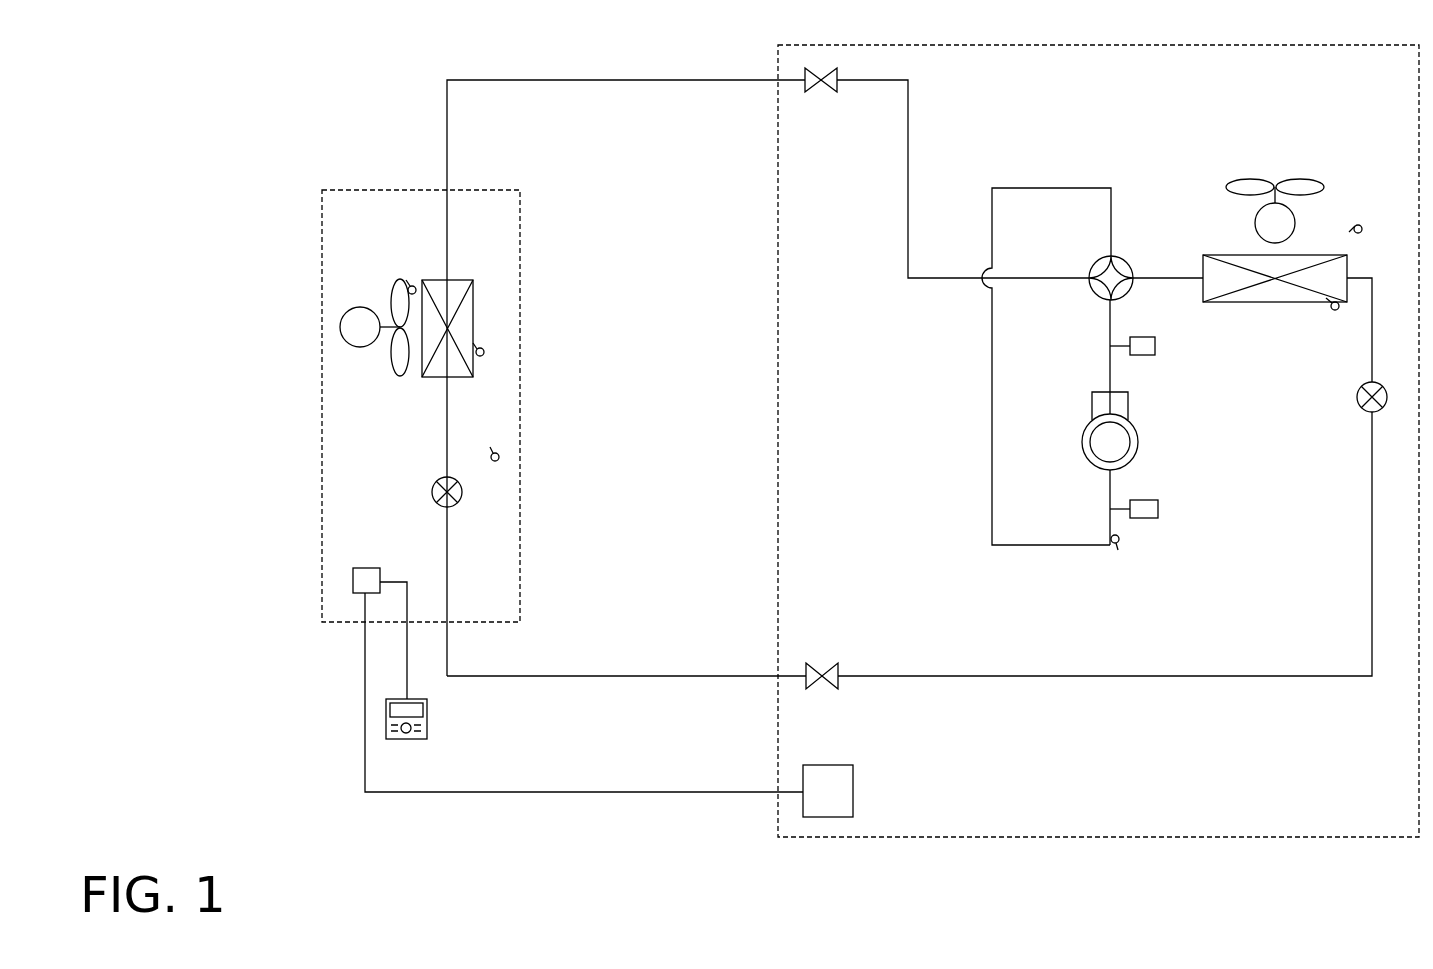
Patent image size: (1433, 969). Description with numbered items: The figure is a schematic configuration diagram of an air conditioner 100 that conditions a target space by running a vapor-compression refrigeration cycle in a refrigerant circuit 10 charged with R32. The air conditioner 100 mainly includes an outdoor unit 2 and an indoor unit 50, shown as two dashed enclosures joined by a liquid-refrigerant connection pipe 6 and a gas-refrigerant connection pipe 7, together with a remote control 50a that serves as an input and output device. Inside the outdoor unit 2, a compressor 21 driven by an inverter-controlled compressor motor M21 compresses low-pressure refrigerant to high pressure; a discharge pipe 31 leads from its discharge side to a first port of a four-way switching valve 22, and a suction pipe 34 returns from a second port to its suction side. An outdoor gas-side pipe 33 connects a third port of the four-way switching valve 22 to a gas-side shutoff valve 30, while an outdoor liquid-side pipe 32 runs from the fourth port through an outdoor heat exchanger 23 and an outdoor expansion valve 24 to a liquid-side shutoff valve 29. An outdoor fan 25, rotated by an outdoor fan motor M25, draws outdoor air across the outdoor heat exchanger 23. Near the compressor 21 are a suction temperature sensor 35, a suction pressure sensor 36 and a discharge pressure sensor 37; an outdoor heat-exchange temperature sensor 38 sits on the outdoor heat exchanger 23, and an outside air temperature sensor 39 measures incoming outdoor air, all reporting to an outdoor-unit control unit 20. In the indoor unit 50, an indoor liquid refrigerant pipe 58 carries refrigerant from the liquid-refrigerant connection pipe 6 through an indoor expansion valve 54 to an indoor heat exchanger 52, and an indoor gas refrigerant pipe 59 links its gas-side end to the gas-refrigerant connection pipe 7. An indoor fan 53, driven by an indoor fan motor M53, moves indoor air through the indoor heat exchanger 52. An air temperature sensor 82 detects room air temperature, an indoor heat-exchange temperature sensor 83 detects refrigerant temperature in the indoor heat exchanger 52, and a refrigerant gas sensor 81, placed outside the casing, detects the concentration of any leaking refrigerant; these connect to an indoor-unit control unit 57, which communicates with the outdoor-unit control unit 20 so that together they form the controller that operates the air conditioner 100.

The air conditioner 100 is at (238, 73).
The refrigerant circuit 10 is at (514, 78).
The outdoor unit 2 is at (778, 836).
The indoor unit 50 is at (395, 190).
The gas-refrigerant connection pipe 7 is at (572, 82).
The liquid-refrigerant connection pipe 6 is at (555, 676).
The gas-side shutoff valve 30 is at (822, 92).
The liquid-side shutoff valve 29 is at (822, 663).
The outdoor gas-side pipe 33 is at (930, 282).
The outdoor liquid-side pipe 32 is at (1372, 482).
The indoor heat exchanger 52 is at (462, 283).
The indoor gas refrigerant pipe 59 is at (445, 222).
The indoor fan 53 is at (400, 368).
The indoor fan motor M53 is at (360, 307).
The air temperature sensor 82 is at (426, 271).
The indoor heat-exchange temperature sensor 83 is at (484, 352).
The refrigerant gas sensor 81 is at (499, 457).
The indoor liquid refrigerant pipe 58 is at (445, 462).
The indoor expansion valve 54 is at (432, 492).
The indoor-unit control unit 57 is at (365, 568).
The remote control 50a is at (404, 740).
The outdoor-unit control unit 20 is at (855, 790).
The compressor 21 is at (1092, 405).
The compressor motor M21 is at (1138, 442).
The four-way switching valve 22 is at (1095, 262).
The suction pipe 34 is at (990, 450).
The discharge pipe 31 is at (1108, 360).
The discharge pressure sensor 37 is at (1155, 346).
The suction pressure sensor 36 is at (1158, 509).
The suction temperature sensor 35 is at (1119, 539).
The outdoor heat exchanger 23 is at (1275, 303).
The outdoor heat-exchange temperature sensor 38 is at (1335, 310).
The outdoor fan 25 is at (1228, 186).
The outdoor fan motor M25 is at (1255, 225).
The outside air temperature sensor 39 is at (1358, 225).
The outdoor expansion valve 24 is at (1357, 400).